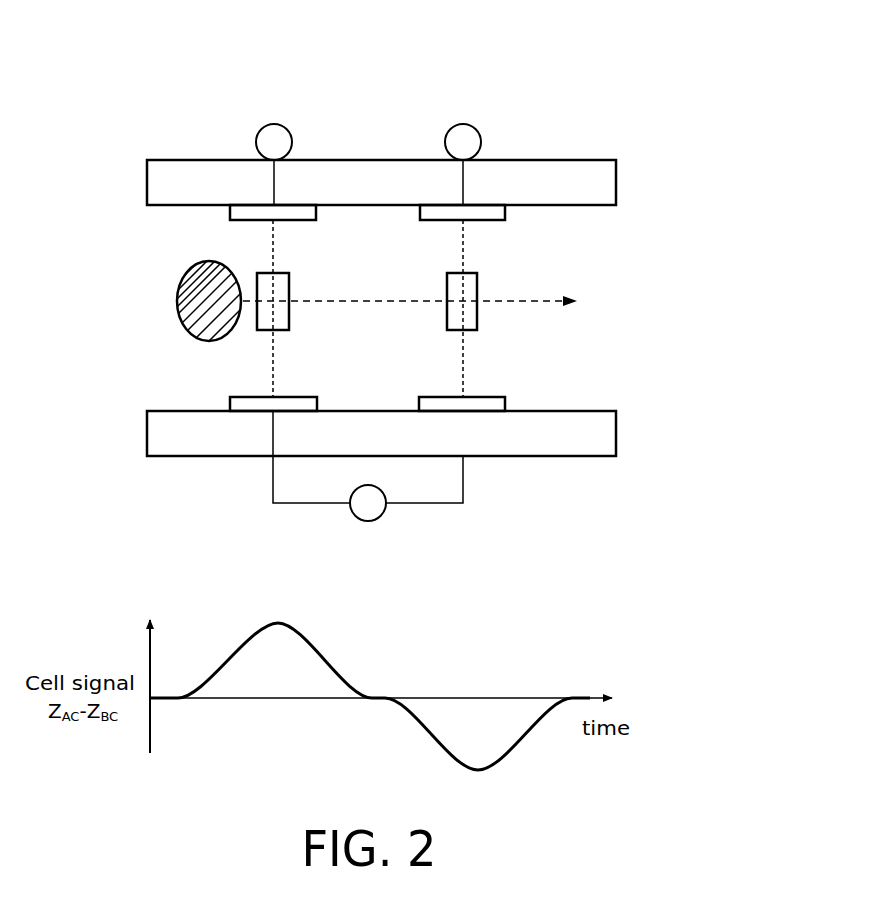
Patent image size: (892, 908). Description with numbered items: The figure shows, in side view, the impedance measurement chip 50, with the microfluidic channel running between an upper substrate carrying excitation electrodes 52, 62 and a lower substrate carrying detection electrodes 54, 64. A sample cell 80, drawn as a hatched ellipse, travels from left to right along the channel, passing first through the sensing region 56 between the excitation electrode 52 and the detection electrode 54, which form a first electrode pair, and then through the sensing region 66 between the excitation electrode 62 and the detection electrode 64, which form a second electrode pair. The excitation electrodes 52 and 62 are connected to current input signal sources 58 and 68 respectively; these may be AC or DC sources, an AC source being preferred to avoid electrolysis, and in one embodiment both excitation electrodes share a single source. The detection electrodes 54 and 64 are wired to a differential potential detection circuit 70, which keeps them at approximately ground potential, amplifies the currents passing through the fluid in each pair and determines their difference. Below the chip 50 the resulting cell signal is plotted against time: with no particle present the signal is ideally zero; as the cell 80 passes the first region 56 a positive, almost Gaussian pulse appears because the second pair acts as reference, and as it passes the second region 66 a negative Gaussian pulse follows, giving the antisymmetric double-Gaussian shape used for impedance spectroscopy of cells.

The impedance measurement chip 50 is at (108, 97).
The excitation electrode 52 is at (316, 208).
The detection electrode 54 is at (317, 403).
The first impedance sensing region 56 is at (289, 288).
The current input signal source 58 is at (292, 142).
The excitation electrode 62 is at (505, 208).
The detection electrode 64 is at (505, 403).
The second impedance sensing region 66 is at (477, 287).
The current input signal source 68 is at (481, 142).
The differential potential detection circuit 70 is at (381, 515).
The sample cell 80 is at (157, 326).